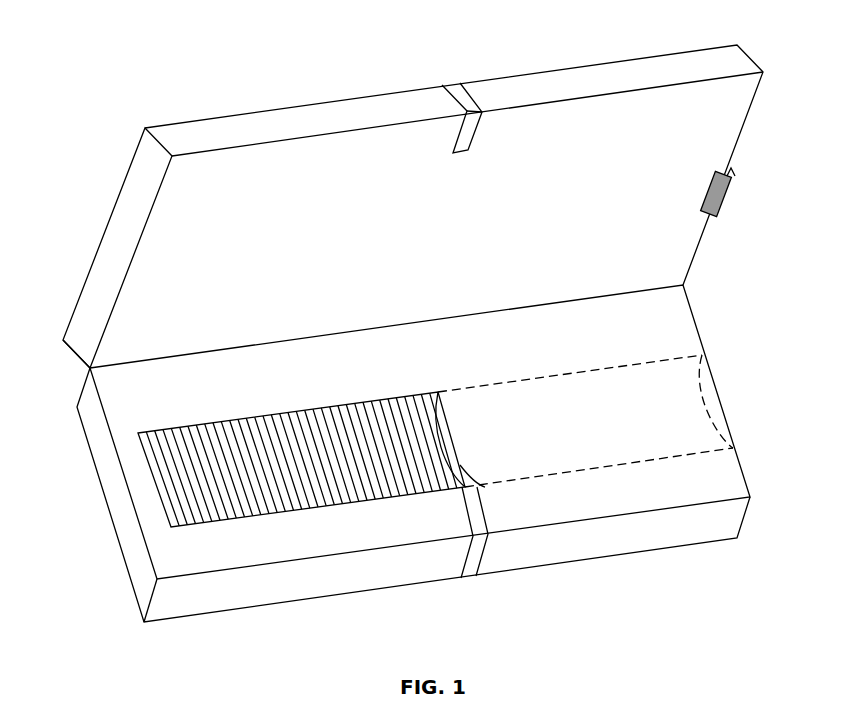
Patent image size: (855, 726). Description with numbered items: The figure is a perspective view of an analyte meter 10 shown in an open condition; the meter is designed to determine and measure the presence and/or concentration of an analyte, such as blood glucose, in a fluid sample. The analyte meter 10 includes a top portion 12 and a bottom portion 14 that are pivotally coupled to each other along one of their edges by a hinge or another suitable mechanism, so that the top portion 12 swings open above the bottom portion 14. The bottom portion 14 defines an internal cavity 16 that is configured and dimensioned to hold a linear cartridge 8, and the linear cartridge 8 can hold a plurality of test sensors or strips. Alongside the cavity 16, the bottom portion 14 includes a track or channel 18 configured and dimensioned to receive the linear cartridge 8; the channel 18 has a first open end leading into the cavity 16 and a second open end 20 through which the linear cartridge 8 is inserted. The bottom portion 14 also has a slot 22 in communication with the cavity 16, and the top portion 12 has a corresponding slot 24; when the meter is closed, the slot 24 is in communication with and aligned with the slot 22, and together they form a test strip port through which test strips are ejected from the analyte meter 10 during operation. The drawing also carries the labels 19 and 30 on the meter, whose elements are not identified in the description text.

The linear cartridge 8 is at (222, 495).
The analyte meter 10 is at (90, 213).
The top portion 12 is at (770, 117).
The bottom portion 14 is at (755, 530).
The internal cavity 16 is at (447, 477).
The channel 18 is at (620, 442).
The ramp edge 19 is at (462, 467).
The second open end 20 is at (717, 403).
The slot 22 is at (472, 553).
The slot 24 is at (452, 92).
The latch 30 is at (722, 200).